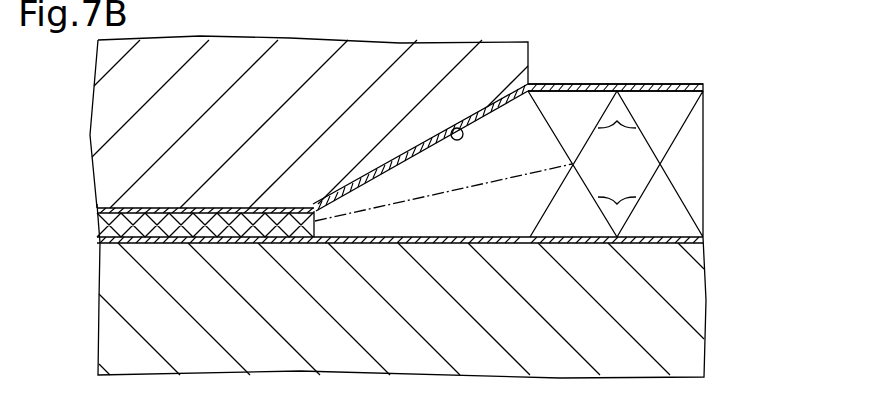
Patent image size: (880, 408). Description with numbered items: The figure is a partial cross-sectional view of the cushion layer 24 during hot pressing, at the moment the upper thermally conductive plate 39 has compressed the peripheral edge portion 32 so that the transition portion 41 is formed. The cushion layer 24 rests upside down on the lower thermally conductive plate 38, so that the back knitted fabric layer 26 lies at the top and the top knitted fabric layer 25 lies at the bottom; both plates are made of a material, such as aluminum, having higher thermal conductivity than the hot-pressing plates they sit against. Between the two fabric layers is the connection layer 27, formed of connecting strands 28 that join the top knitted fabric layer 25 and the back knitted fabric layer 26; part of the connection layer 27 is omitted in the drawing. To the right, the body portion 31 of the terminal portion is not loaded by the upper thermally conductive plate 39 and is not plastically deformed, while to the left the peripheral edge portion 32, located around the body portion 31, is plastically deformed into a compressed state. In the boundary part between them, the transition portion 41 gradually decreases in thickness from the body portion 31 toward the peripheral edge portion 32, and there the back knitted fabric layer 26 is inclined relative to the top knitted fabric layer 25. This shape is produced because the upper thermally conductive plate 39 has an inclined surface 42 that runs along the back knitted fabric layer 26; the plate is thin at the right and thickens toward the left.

The cushion layer 24 is at (756, 118).
The top knitted fabric layer 25 is at (684, 237).
The back knitted fabric layer 26 is at (684, 92).
The connection layer 27 is at (693, 163).
The connecting strands 28 is at (617, 162).
The body portion 31 is at (636, 84).
The peripheral edge portion 32 is at (238, 208).
The lower thermally conductive plate 38 is at (115, 330).
The upper thermally conductive plate 39 is at (103, 115).
The transition portion 41 is at (407, 153).
The inclined surface 42 is at (528, 42).